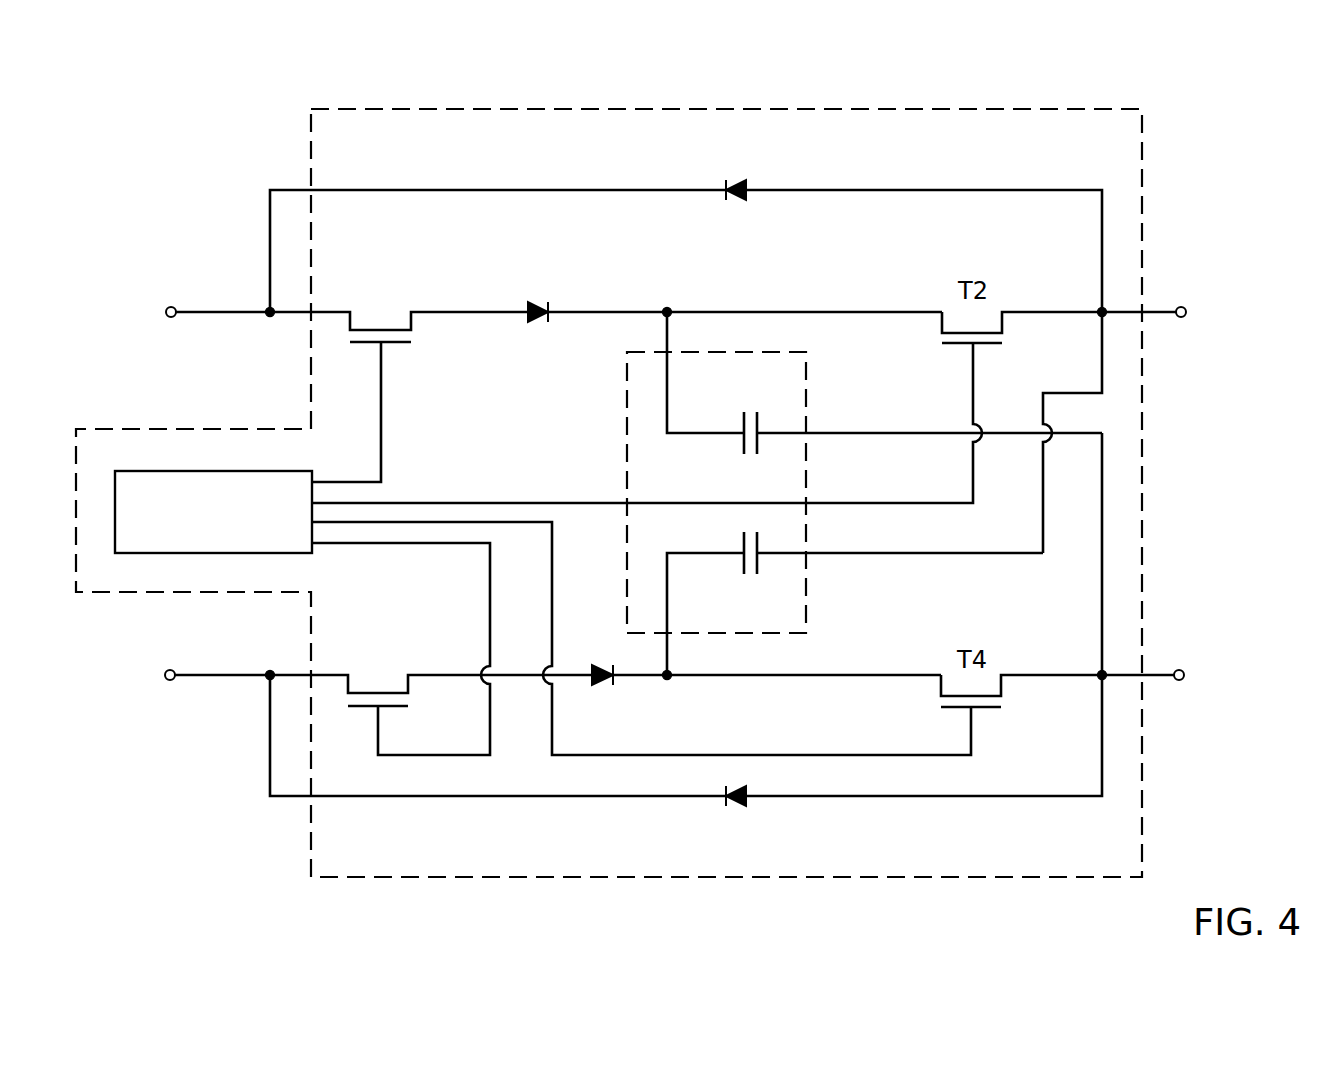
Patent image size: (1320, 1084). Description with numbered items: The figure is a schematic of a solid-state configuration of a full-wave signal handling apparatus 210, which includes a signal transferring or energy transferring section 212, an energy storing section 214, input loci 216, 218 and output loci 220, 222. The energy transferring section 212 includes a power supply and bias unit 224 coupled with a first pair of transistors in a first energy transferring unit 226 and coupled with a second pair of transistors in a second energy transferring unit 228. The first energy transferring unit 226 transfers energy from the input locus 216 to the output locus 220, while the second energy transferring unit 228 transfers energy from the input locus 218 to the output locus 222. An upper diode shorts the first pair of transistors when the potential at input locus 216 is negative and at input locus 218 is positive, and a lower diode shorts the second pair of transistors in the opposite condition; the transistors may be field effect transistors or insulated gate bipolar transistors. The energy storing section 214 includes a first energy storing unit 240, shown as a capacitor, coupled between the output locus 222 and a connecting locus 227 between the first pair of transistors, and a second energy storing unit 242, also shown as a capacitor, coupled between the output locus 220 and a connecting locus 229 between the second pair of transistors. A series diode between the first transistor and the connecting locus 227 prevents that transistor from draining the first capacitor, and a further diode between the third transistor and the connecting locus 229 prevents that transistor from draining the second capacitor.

The signal handling apparatus 210 is at (1309, 774).
The energy transferring section 212 is at (1142, 148).
The energy storing section 214 is at (627, 461).
The input locus 216 is at (171, 306).
The input locus 218 is at (170, 681).
The output locus 220 is at (1181, 306).
The output locus 222 is at (1180, 669).
The power supply and bias unit 224 is at (314, 553).
The first energy transferring unit 226 is at (298, 150).
The connecting locus 227 is at (672, 317).
The second energy transferring unit 228 is at (294, 836).
The connecting locus 229 is at (672, 671).
The first energy storing unit 240 is at (744, 441).
The second energy storing unit 242 is at (742, 548).